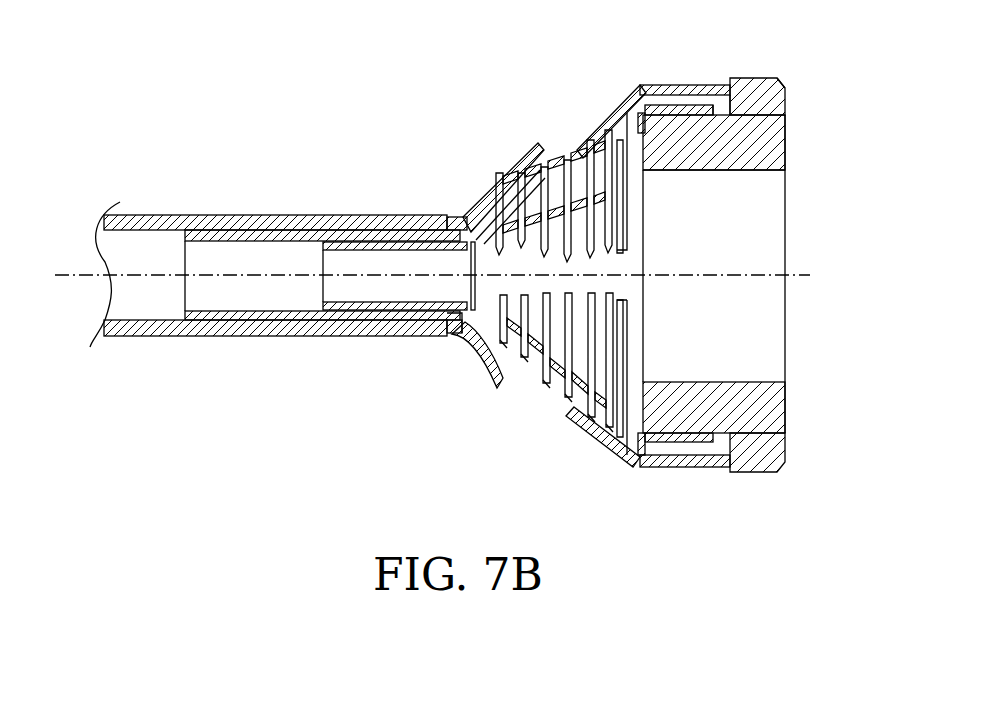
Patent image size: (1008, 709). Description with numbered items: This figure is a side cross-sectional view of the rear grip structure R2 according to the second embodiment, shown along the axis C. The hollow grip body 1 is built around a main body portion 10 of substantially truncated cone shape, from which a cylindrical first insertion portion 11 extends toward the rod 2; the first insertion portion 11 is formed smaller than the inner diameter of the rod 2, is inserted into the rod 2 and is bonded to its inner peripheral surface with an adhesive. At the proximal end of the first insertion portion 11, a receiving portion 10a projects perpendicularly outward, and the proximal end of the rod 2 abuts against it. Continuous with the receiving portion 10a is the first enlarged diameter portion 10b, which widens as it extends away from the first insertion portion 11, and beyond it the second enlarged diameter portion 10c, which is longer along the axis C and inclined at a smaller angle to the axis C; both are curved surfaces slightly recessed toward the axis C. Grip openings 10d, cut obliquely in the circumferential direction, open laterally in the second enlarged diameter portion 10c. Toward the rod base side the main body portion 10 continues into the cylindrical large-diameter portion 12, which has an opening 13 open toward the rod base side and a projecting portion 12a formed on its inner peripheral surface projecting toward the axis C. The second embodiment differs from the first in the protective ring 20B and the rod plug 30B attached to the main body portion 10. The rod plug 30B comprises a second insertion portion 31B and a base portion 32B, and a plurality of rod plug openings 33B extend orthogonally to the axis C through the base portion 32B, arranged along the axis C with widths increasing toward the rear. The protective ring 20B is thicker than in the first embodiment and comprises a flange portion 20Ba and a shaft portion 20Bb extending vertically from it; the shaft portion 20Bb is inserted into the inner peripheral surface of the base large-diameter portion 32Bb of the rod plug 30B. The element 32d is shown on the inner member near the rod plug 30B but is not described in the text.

The rear grip structure R2 is at (250, 83).
The grip body 1 is at (390, 107).
The rod 2 is at (228, 216).
The first insertion portion 11 is at (260, 313).
The second insertion portion 31B is at (372, 305).
The hook portion 32d is at (448, 315).
The main body portion 10 is at (501, 251).
The receiving portion 10a is at (432, 215).
The first enlarged diameter portion 10b is at (475, 197).
The second enlarged diameter portion 10c is at (642, 86).
The grip openings 10d is at (596, 130).
The rod plug opening 33B is at (556, 160).
The base portion 32B is at (537, 368).
The rod plug 30B is at (544, 302).
The large-diameter portion 12 is at (672, 83).
The projecting portion 12a is at (720, 115).
The opening 13 is at (650, 127).
The base large-diameter portion 32Bb is at (680, 100).
The protective ring 20B is at (760, 240).
The flange portion 20Ba is at (763, 98).
The shaft portion 20Bb is at (680, 157).
The axis C is at (62, 275).